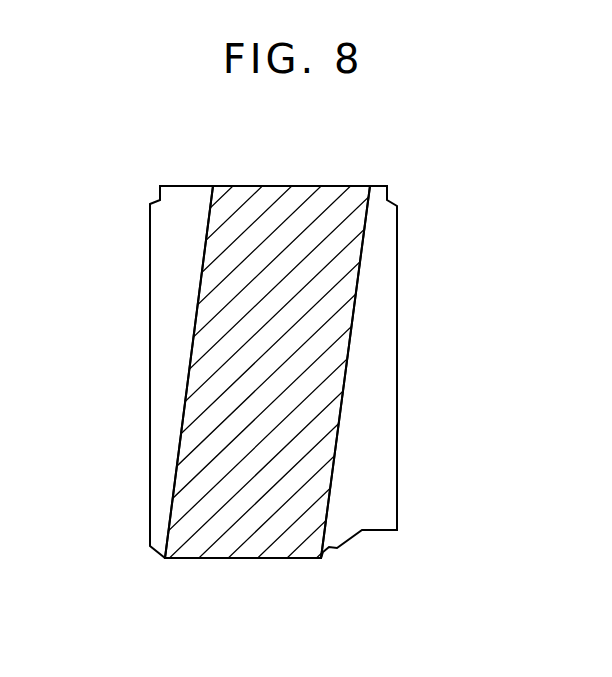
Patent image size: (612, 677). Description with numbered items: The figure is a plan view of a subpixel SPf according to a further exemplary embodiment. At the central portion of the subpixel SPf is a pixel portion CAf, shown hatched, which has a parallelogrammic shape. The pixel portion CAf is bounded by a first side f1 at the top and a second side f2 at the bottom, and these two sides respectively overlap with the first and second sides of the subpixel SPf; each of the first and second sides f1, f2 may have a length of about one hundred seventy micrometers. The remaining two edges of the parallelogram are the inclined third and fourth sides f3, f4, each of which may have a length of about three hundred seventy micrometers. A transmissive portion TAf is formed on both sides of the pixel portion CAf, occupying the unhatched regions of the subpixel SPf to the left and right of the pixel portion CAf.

The subpixel SPf is at (143, 167).
The transmissive portion TAf is at (172, 275).
The pixel portion CAf is at (222, 351).
The first side f1 is at (293, 186).
The second side f2 is at (243, 558).
The third side f3 is at (181, 417).
The fourth side f4 is at (346, 368).